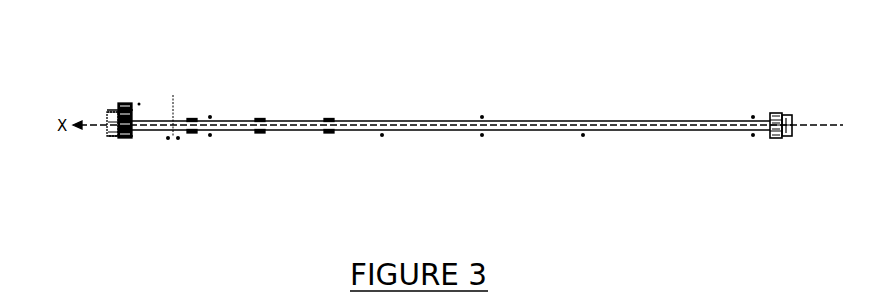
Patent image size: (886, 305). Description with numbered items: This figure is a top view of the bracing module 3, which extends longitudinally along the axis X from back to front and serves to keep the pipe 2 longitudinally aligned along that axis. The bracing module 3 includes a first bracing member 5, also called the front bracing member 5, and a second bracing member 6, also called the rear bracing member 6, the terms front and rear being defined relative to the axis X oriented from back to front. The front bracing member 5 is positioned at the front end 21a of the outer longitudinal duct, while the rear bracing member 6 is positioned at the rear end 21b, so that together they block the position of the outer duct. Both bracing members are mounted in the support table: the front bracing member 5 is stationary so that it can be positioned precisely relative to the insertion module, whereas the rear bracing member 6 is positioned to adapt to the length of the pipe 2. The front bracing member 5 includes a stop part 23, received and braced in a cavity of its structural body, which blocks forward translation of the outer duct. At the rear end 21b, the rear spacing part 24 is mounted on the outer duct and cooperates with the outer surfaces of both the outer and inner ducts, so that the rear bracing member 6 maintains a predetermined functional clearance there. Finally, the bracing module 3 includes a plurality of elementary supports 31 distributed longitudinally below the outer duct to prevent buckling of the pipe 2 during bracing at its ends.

The pipe 2 is at (518, 121).
The bracing module 3 is at (663, 104).
The first bracing member 5 is at (127, 108).
The second bracing member 6 is at (777, 114).
The front end 21a is at (112, 145).
The rear end 21b is at (772, 147).
The stop part 23 is at (113, 110).
The rear spacing part 24 is at (780, 139).
The elementary supports 31 is at (192, 118).